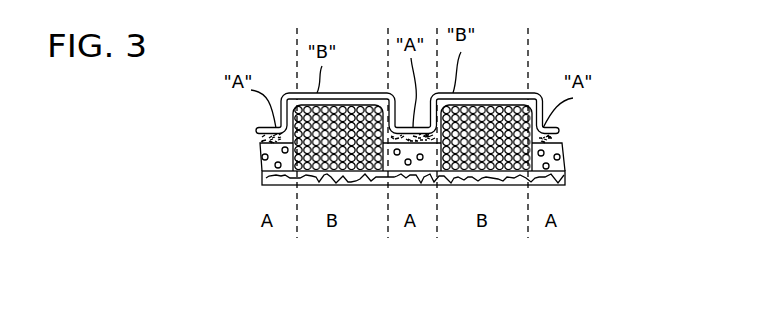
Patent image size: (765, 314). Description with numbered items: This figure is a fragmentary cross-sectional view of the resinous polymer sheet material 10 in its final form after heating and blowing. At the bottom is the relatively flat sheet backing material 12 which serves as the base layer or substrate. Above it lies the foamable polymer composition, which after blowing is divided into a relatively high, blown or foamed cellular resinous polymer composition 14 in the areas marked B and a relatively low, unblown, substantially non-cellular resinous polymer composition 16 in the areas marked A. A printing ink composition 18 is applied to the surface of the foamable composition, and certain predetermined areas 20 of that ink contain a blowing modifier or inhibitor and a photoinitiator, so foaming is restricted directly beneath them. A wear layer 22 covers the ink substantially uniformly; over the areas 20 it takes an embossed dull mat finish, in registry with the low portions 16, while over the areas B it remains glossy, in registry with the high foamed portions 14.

The resinous polymer sheet material 10 is at (550, 70).
The sheet backing material 12 is at (563, 177).
The cellular resinous polymer composition 14 is at (362, 172).
The non-cellular resinous polymer composition 16 is at (261, 157).
The printing ink composition 18 is at (578, 138).
The predetermined areas 20 is at (270, 130).
The wear layer 22 is at (485, 93).